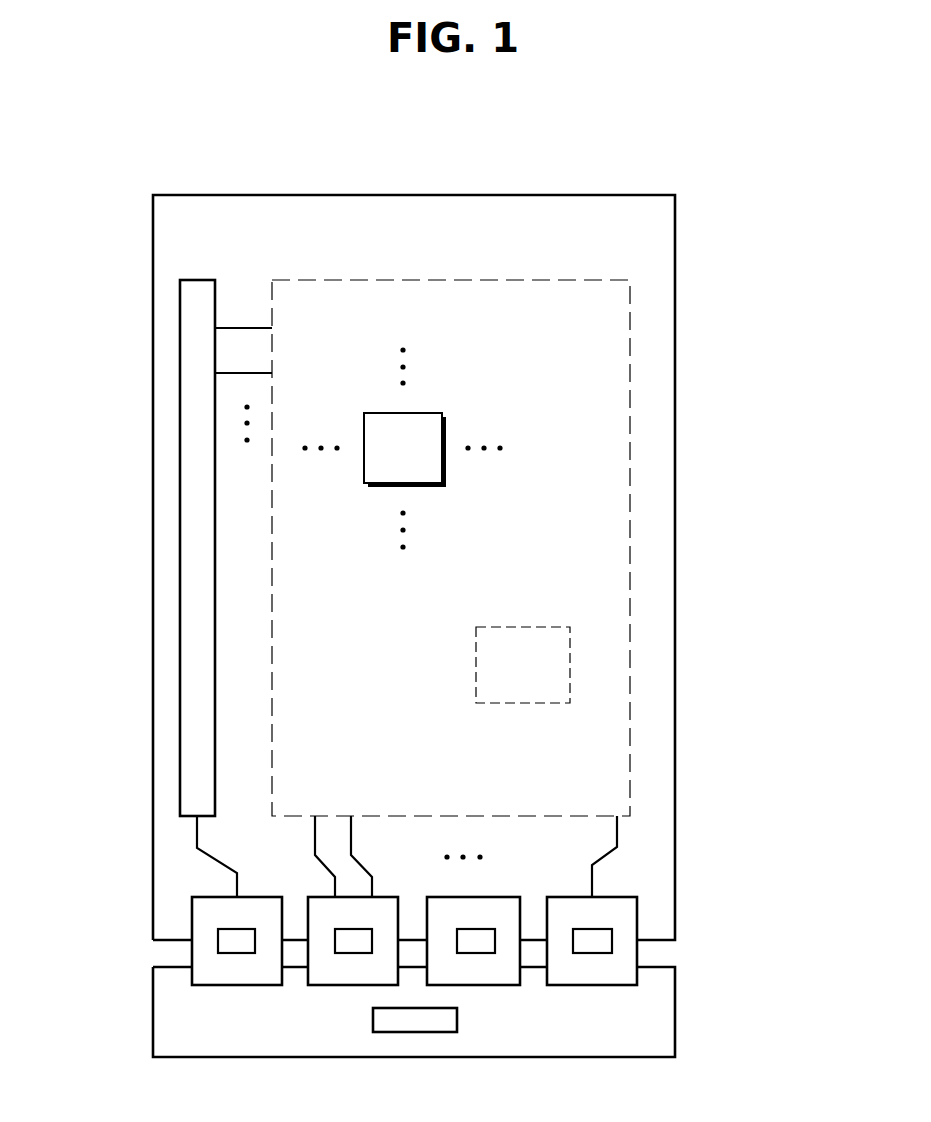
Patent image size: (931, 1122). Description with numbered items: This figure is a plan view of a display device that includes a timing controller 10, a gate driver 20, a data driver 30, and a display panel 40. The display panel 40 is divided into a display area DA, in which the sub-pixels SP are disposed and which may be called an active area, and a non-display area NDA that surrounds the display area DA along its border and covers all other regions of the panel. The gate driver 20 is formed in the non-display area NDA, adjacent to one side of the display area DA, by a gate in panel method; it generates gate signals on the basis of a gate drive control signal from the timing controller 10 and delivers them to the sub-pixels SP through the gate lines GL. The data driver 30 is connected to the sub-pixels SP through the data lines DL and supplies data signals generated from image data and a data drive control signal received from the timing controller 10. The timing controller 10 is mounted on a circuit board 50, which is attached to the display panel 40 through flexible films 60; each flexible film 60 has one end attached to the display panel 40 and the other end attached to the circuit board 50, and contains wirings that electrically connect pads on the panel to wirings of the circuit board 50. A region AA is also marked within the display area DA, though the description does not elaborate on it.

The timing controller 10 is at (413, 1032).
The gate driver 20 is at (190, 363).
The data driver 30 is at (216, 937).
The display panel 40 is at (675, 248).
The circuit board 50 is at (675, 1008).
The flexible film 60 is at (637, 916).
The gate line GL is at (241, 327).
The data line DL is at (617, 830).
The display area DA is at (630, 355).
The non-display area NDA is at (657, 430).
The area AA is at (570, 663).
The sub-pixel SP is at (402, 448).